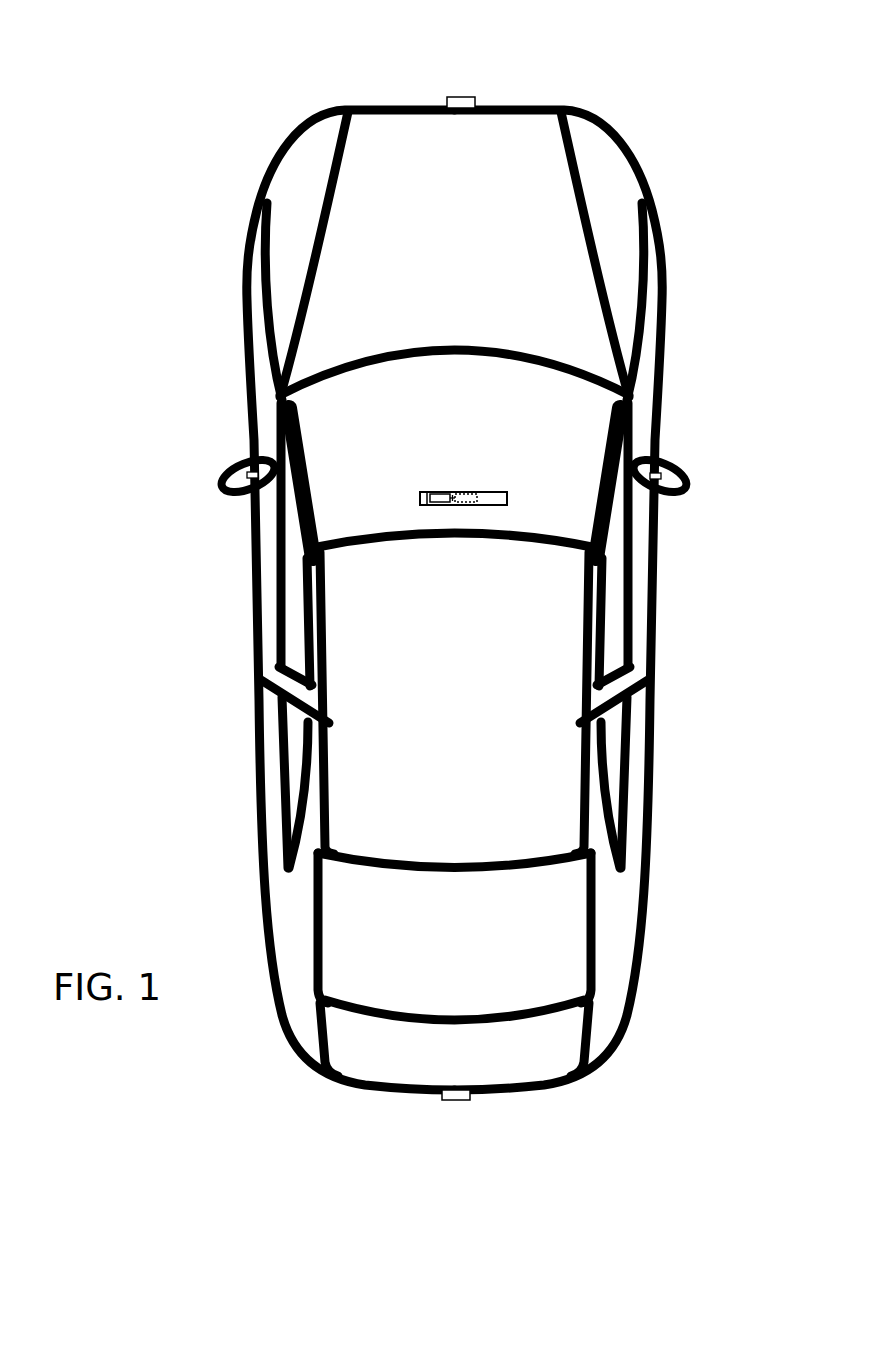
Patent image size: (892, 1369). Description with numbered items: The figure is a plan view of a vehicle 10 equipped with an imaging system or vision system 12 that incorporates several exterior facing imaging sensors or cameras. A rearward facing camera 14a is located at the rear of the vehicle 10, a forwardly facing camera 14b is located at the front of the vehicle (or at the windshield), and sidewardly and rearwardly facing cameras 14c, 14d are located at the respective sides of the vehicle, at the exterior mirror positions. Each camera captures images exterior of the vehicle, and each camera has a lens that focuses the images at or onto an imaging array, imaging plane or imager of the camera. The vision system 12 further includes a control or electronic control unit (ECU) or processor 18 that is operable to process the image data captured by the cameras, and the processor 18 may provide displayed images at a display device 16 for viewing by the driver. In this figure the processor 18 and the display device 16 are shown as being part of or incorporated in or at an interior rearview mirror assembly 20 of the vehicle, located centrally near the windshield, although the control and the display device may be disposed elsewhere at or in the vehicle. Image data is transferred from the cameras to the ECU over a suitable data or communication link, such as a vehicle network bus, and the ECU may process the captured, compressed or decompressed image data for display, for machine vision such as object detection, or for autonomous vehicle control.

The vehicle 10 is at (205, 202).
The vision system 12 is at (405, 1120).
The rearward facing camera 14a is at (460, 1097).
The forwardly facing camera 14b is at (463, 97).
The sidewardly/rearwardly facing camera 14c is at (250, 474).
The sidewardly/rearwardly facing camera 14d is at (657, 477).
The display device 16 is at (438, 493).
The electronic control unit 18 is at (458, 491).
The interior rearview mirror assembly 20 is at (508, 491).